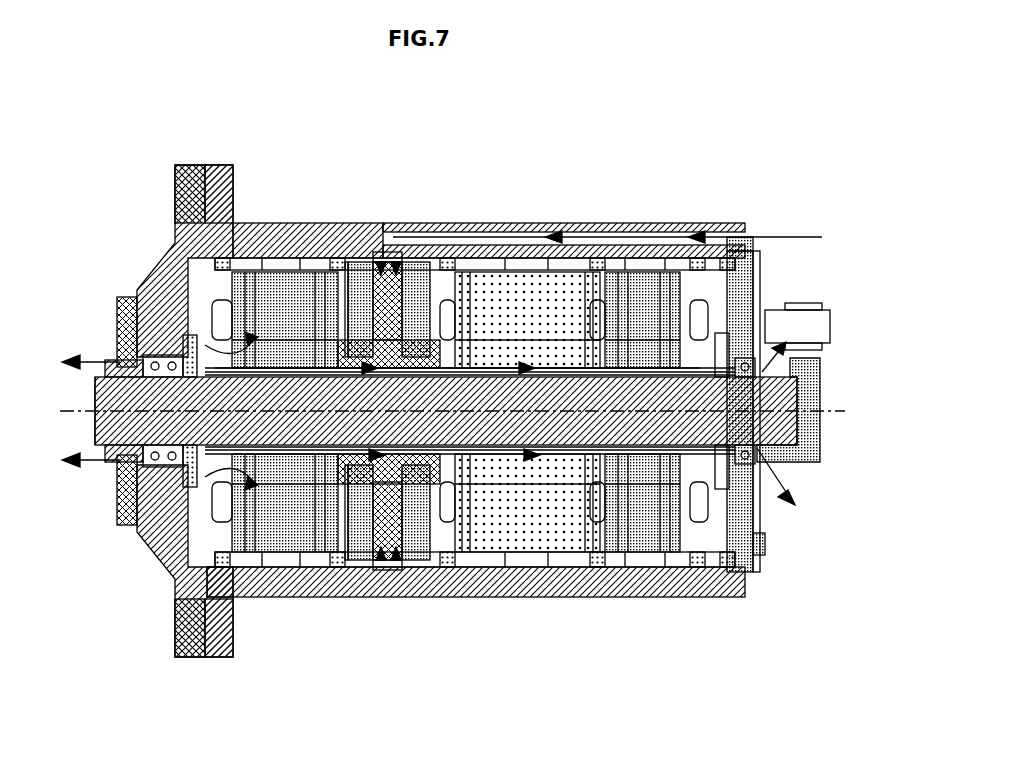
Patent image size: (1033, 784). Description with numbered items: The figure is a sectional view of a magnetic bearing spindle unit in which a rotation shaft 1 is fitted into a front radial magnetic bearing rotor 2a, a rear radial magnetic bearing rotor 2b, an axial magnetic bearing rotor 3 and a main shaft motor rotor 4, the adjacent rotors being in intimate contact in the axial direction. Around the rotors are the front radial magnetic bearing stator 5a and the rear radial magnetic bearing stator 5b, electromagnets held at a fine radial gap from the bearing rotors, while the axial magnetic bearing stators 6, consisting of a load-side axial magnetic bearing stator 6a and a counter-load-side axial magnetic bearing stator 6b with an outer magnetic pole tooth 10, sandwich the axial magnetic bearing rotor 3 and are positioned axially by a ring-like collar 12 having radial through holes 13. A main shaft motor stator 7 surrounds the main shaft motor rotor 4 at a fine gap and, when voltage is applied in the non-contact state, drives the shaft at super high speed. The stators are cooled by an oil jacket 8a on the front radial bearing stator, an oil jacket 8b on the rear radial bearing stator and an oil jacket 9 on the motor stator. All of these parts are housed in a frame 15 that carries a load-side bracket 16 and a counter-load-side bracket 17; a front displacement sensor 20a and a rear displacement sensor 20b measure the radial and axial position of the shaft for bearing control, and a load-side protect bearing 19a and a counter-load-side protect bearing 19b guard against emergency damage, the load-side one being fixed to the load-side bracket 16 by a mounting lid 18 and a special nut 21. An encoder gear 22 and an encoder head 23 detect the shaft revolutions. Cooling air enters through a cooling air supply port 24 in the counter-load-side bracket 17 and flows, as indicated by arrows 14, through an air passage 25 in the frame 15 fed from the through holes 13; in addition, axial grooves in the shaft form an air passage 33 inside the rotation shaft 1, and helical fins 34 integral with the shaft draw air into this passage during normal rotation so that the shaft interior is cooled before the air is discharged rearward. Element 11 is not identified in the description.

The rotation shaft 1 is at (95, 377).
The front radial magnetic bearing rotor 2a is at (150, 270).
The rear radial magnetic bearing rotor 2b is at (742, 300).
The axial magnetic bearing rotor 3 is at (392, 568).
The main shaft motor rotor 4 is at (503, 375).
The front radial magnetic bearing stator 5a is at (280, 270).
The rear radial magnetic bearing stator 5b is at (645, 285).
The axial magnetic bearing stators 6 is at (353, 478).
The load-side axial magnetic bearing stator 6a is at (358, 560).
The counter-load-side axial magnetic bearing stator 6b is at (380, 562).
The main shaft motor stator 7 is at (535, 290).
The oil jacket 8a is at (300, 567).
The oil jacket 8b is at (613, 597).
The oil jacket 9 is at (448, 567).
The outer magnetic pole tooth 10 is at (355, 262).
The partition wall 11 is at (365, 250).
The collar 12 is at (385, 256).
The through holes 13 is at (400, 262).
The arrows 14 is at (178, 600).
The frame 15 is at (222, 165).
The load-side bracket 16 is at (190, 205).
The counter-load-side bracket 17 is at (755, 320).
The mounting lid 18 is at (113, 310).
The load-side protect bearing 19a is at (160, 467).
The counter-load-side protect bearing 19b is at (758, 500).
The front displacement sensor 20a is at (185, 487).
The rear displacement sensor 20b is at (753, 537).
The special nut 21 is at (123, 458).
The encoder gear 22 is at (822, 365).
The encoder head 23 is at (810, 330).
The cooling air supply port 24 is at (748, 245).
The air passage 25 is at (657, 228).
The air passage 33 is at (507, 445).
The helical fins 34 is at (236, 597).